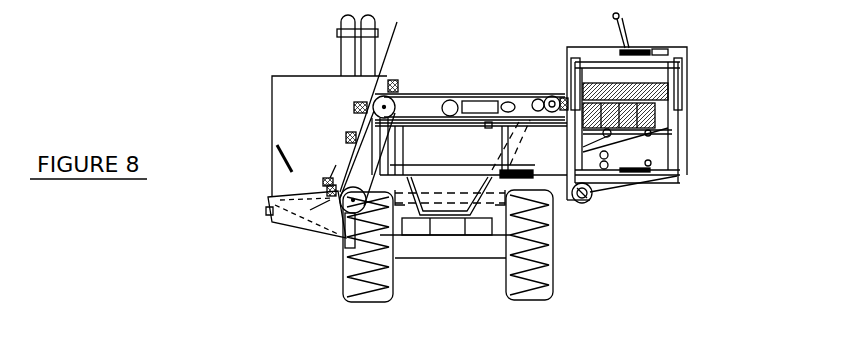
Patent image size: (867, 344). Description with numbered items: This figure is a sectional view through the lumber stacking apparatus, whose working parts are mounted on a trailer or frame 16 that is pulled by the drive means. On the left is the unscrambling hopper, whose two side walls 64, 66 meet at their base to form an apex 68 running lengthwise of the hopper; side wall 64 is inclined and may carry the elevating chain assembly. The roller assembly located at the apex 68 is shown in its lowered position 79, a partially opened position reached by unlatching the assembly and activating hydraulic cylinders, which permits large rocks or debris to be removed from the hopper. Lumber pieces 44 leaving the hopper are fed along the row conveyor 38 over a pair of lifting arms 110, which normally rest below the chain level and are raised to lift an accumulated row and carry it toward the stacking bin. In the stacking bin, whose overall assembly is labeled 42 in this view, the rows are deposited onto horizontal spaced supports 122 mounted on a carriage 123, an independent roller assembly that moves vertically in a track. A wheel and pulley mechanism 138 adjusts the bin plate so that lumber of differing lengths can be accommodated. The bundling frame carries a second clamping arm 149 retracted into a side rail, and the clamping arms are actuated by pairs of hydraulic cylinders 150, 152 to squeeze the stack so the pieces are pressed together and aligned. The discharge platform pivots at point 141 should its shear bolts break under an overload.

The trailer or frame 16 is at (442, 259).
The row conveyor 38 is at (523, 95).
The crushing assembly 42 is at (692, 48).
The lumber pieces 44 is at (392, 93).
The side wall 64 is at (390, 72).
The side wall 66 is at (272, 112).
The apex 68 is at (518, 0).
The lowered position 79 is at (311, 229).
The lifting arms 110 is at (662, 100).
The horizontal spaced supports 122 is at (678, 135).
The carriage 123 is at (638, 176).
The wheel and pulley mechanism 138 is at (590, 205).
The pivot point 141 is at (595, 62).
The second clamping arm 149 is at (673, 153).
The hydraulic cylinders 150 is at (640, 184).
The hydraulic cylinders 152 is at (683, 82).